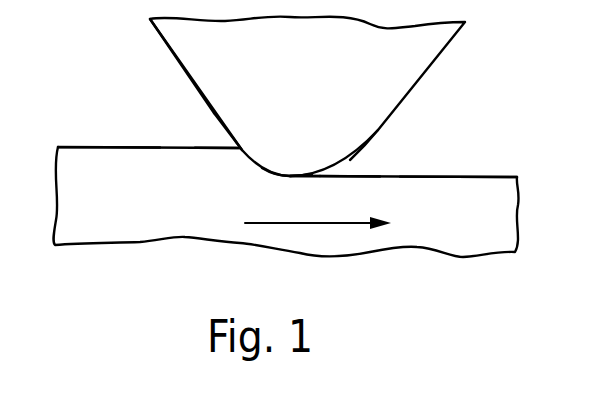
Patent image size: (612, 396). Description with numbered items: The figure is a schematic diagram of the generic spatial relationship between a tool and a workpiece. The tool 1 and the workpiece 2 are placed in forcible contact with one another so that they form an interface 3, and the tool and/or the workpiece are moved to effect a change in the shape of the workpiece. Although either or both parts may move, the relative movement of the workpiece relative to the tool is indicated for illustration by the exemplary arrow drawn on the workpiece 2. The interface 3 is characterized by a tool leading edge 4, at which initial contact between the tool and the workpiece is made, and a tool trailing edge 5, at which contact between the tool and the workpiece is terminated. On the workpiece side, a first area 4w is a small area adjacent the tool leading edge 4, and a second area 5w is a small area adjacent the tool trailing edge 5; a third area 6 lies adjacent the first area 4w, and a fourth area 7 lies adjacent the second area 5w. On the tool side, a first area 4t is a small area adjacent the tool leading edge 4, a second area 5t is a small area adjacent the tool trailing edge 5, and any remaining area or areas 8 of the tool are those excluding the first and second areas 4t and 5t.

The tool 1 is at (313, 75).
The workpiece 2 is at (108, 199).
The interface 3 is at (273, 173).
The tool leading edge 4 is at (242, 153).
The first area of the tool 4t is at (222, 127).
The first area of the workpiece 4w is at (212, 146).
The tool trailing edge 5 is at (308, 176).
The second area of the tool 5t is at (350, 165).
The second area of the workpiece 5w is at (345, 174).
The third area of the workpiece 6 is at (98, 146).
The fourth area of the workpiece 7 is at (473, 176).
The remaining area of the tool 8 is at (184, 68).